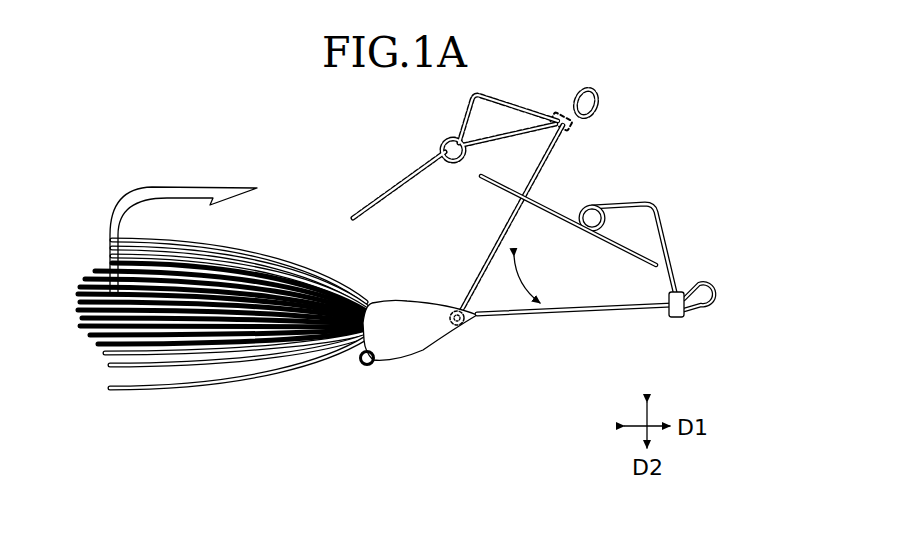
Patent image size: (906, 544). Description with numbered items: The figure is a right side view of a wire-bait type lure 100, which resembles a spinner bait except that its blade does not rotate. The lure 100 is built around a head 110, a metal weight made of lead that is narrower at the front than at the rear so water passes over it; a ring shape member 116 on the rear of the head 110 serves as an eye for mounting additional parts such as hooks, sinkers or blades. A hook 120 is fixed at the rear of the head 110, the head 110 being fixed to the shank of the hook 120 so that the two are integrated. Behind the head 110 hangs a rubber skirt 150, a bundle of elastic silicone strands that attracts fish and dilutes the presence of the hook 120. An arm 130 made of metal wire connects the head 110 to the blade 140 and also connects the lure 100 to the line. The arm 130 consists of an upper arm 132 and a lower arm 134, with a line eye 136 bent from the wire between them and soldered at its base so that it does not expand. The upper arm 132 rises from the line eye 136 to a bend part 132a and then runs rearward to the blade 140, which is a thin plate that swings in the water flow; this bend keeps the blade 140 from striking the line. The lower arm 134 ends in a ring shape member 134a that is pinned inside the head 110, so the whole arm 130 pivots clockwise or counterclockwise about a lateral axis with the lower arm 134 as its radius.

The lure 100 is at (657, 81).
The head 110 is at (430, 364).
The ring shape member 116 is at (361, 366).
The hook 120 is at (188, 194).
The arm 130 is at (720, 252).
The upper arm 132 is at (664, 230).
The bend part 132a is at (649, 200).
The lower arm 134 is at (581, 313).
The ring shape member 134a is at (466, 326).
The line eye 136 is at (721, 296).
The blade 140 is at (562, 201).
The rubber skirt 150 is at (211, 403).